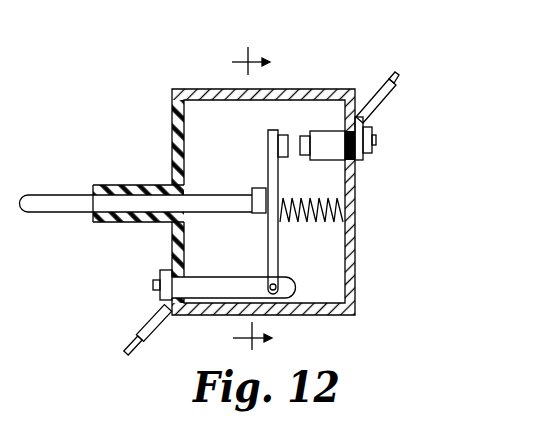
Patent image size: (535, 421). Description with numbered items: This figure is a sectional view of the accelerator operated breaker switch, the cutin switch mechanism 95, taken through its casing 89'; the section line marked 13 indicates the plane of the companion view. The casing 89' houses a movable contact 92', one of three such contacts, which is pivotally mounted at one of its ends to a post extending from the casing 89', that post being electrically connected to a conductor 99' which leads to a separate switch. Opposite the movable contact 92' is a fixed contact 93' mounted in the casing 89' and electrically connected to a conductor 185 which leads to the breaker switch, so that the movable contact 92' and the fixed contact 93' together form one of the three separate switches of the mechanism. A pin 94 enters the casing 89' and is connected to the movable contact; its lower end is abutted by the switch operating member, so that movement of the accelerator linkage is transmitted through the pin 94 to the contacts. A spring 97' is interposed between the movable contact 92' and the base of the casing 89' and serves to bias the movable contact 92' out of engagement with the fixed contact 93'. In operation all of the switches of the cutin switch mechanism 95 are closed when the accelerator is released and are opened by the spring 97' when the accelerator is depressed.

The casing 89' is at (295, 202).
The pin 94 is at (37, 202).
The movable contact 92' is at (245, 208).
The fixed contact 93' is at (338, 105).
The conductor 185 is at (399, 70).
The cutin switch mechanism 95 is at (400, 203).
The spring 97' is at (285, 260).
The conductor 99' is at (114, 330).
The section line 13- 13 is at (267, 200).